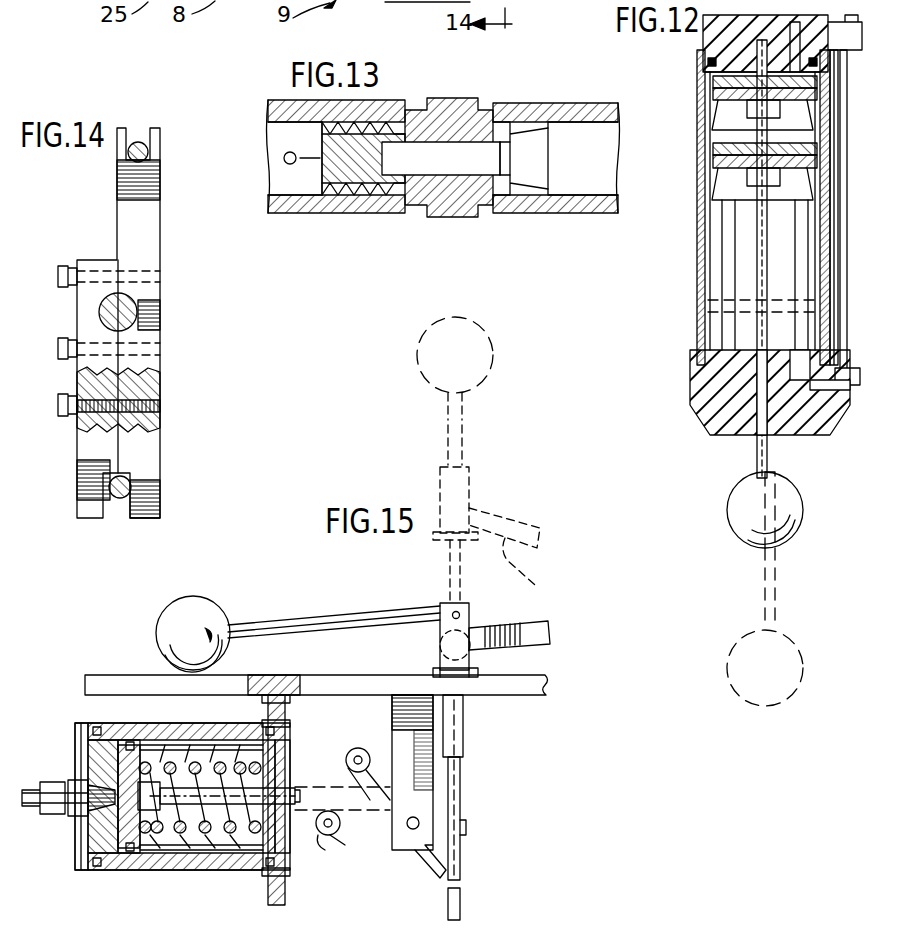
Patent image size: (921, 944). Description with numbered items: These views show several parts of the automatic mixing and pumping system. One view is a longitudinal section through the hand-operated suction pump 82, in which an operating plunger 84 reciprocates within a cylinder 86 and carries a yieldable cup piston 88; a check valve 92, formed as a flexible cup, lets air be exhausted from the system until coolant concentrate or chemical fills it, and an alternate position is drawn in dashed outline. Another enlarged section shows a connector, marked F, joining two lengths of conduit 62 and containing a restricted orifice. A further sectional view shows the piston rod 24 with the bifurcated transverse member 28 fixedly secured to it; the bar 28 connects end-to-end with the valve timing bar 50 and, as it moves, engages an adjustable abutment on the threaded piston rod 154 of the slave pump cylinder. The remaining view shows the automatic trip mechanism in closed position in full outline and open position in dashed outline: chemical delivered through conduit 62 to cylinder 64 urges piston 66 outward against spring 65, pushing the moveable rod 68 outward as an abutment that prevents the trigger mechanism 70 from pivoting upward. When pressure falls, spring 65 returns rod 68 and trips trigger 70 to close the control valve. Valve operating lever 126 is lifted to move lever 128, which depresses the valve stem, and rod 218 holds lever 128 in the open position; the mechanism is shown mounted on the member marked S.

In FIG. 13, the conduit 62 is at (290, 214).
In FIG. 15, the conduit 62 is at (25, 785).
In FIG. 13, the coupling nut F is at (448, 218).
In FIG. 12, the suction pump 82 is at (697, 280).
In FIG. 12, the operating plunger 84 is at (745, 490).
In FIG. 12, the cylinder 86 is at (697, 333).
In FIG. 12, the yieldable cup piston 88 is at (735, 190).
In FIG. 12, the check valve 92 is at (740, 125).
In FIG. 14, the piston rod 24 is at (158, 328).
In FIG. 14, the transverse bar 28 is at (150, 452).
In FIG. 14, the valve timing bar 50 is at (150, 155).
In FIG. 14, the threaded piston rod 154 is at (120, 500).
In FIG. 15, the valve operating lever 126 is at (480, 400).
In FIG. 15, the lever 128 is at (525, 640).
In FIG. 15, the support plate S is at (520, 698).
In FIG. 15, the cylinder 64 is at (163, 866).
In FIG. 15, the spring 65 is at (182, 830).
In FIG. 15, the piston 66 is at (158, 755).
In FIG. 15, the moveable rod 68 is at (318, 775).
In FIG. 15, the trigger mechanism 70 is at (365, 750).
In FIG. 15, the rod 218 is at (463, 780).